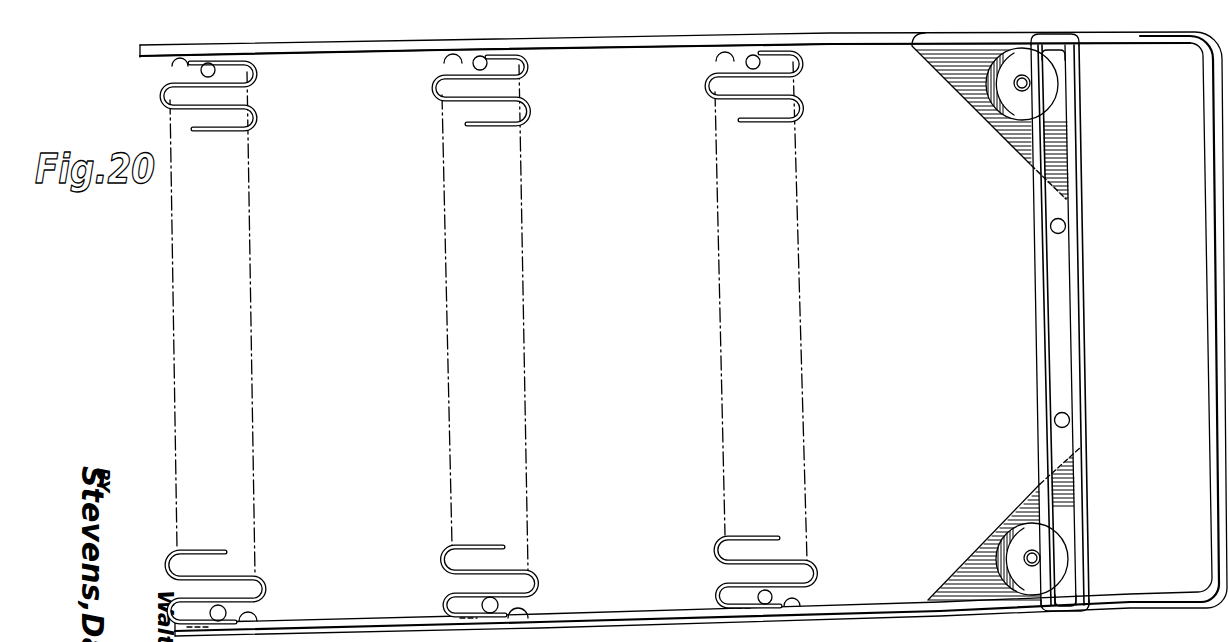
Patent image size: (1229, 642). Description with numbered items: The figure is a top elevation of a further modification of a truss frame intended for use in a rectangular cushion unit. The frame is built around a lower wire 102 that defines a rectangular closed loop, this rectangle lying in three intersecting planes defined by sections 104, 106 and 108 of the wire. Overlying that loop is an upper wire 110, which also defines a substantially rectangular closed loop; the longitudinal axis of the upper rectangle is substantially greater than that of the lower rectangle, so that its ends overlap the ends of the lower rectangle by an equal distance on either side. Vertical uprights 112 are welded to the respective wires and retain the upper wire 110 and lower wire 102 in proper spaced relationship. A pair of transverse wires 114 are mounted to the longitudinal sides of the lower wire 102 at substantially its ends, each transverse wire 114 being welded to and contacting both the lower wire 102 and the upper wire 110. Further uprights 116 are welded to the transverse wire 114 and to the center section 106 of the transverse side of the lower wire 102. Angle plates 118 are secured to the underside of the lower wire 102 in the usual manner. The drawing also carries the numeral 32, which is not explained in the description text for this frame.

The spring 32 is at (763, 122).
The lower wire 102 is at (1082, 390).
The section 104 is at (1072, 137).
The center section 106 is at (1075, 267).
The section 108 is at (1082, 508).
The upper wire 110 is at (350, 53).
The upright 112 is at (488, 62).
The transverse wire 114 is at (1043, 362).
The upright 116 is at (1050, 225).
The angle plate 118 is at (953, 63).